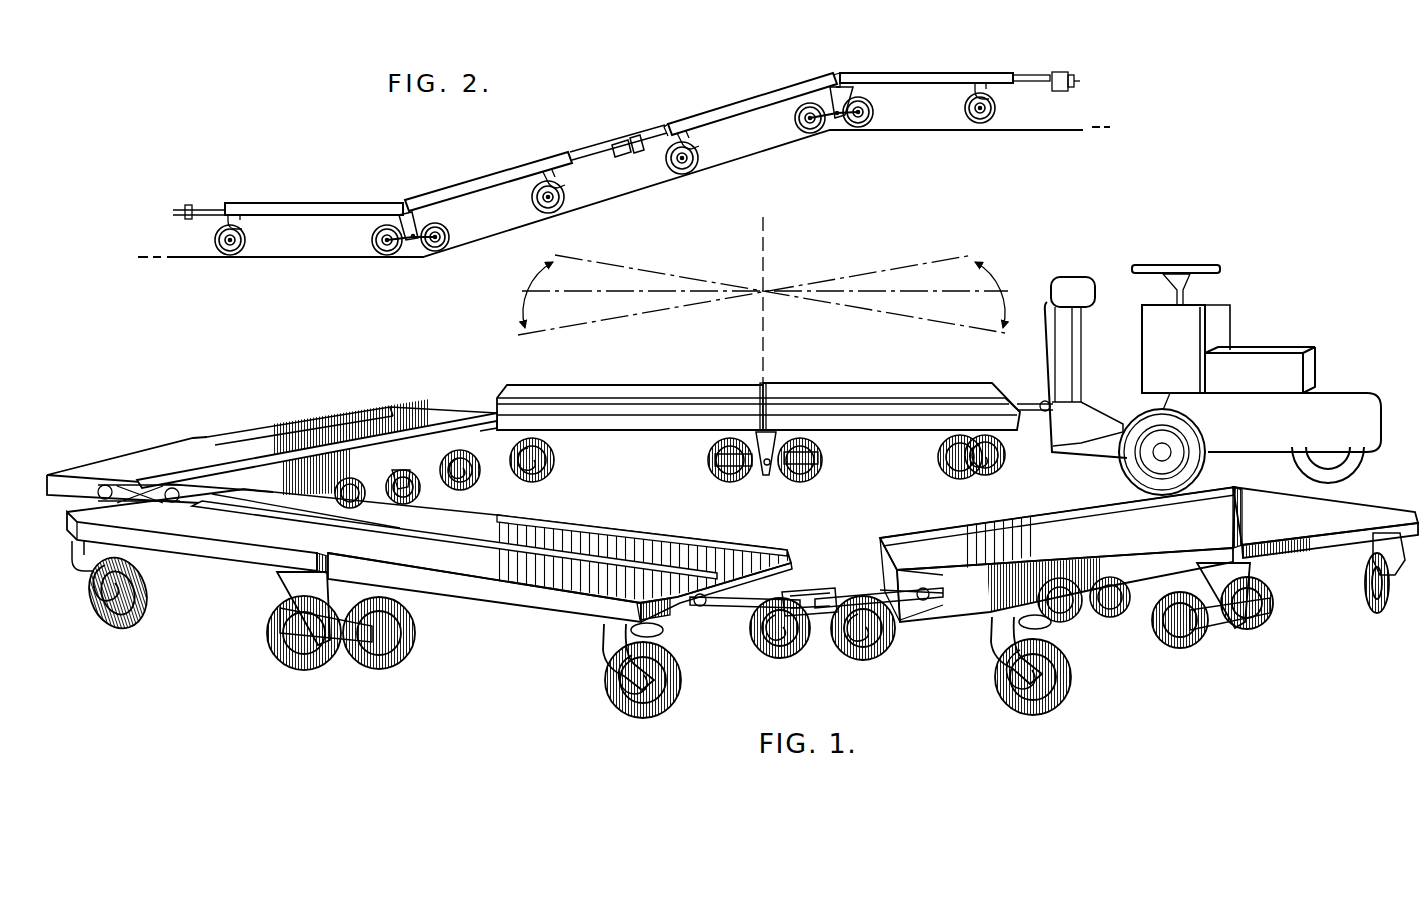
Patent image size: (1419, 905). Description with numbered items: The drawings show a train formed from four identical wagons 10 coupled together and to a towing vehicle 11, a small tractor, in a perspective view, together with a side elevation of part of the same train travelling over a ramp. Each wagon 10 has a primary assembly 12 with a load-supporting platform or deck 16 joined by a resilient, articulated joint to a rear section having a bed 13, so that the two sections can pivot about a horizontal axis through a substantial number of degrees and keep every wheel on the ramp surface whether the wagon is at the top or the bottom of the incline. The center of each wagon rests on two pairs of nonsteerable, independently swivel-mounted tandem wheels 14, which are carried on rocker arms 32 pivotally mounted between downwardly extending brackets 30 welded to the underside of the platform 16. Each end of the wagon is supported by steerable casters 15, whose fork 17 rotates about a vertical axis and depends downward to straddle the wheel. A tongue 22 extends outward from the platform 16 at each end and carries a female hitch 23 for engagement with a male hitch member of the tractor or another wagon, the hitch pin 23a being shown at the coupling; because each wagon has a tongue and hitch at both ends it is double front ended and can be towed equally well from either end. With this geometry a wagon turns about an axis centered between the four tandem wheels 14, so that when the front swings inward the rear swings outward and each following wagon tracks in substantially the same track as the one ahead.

In FIG. 1, the wagon 10 is at (788, 352).
In FIG. 1, the towing vehicle 11 is at (1199, 380).
In FIG. 2, the primary assembly 12 is at (709, 123).
In FIG. 1, the primary assembly 12 is at (651, 487).
In FIG. 2, the bed 13 is at (505, 141).
In FIG. 1, the bed 13 is at (732, 487).
In FIG. 2, the tandem-mounted wheels 14 is at (626, 163).
In FIG. 1, the tandem-mounted wheels 14 is at (770, 572).
In FIG. 2, the casters 15 is at (616, 169).
In FIG. 1, the casters 15 is at (737, 595).
In FIG. 2, the load-supporting platform 16 is at (926, 56).
In FIG. 1, the load-supporting platform 16 is at (713, 526).
In FIG. 1, the fork 17 is at (835, 654).
In FIG. 2, the tongue 22 is at (810, 100).
In FIG. 1, the tongue 22 is at (816, 594).
In FIG. 2, the female hitch 23 is at (846, 95).
In FIG. 1, the female hitch 23 is at (814, 634).
In FIG. 2, the coupler pin 23a is at (1101, 75).
In FIG. 1, the bracket 30 is at (773, 604).
In FIG. 1, the rocker arm 32 is at (771, 630).